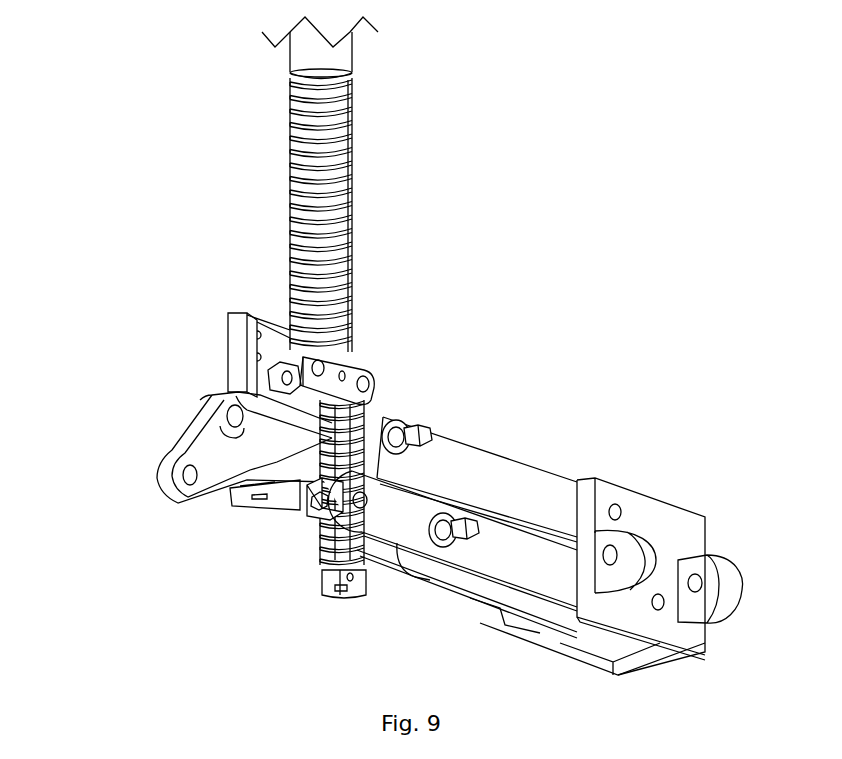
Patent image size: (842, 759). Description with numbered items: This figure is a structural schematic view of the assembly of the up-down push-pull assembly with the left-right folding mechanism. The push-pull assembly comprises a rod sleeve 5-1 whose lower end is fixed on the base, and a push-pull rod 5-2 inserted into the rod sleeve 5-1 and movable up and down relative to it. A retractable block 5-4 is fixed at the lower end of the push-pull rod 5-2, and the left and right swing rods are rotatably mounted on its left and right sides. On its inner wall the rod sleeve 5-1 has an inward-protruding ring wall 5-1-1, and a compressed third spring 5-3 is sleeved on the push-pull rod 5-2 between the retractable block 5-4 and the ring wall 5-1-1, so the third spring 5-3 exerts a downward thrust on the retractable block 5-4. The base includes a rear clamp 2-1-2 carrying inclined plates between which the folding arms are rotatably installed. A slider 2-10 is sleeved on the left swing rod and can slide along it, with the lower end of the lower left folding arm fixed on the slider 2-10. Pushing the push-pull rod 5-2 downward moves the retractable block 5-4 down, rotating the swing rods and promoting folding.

The rod sleeve 5-1 is at (347, 50).
The ring wall 5-1-1 is at (352, 82).
The third spring 5-3 is at (350, 155).
The push-pull rod 5-2 is at (362, 220).
The retractable block 5-4 is at (355, 378).
The rear clamp 2-1-2 is at (192, 463).
The slider 2-10 is at (332, 500).